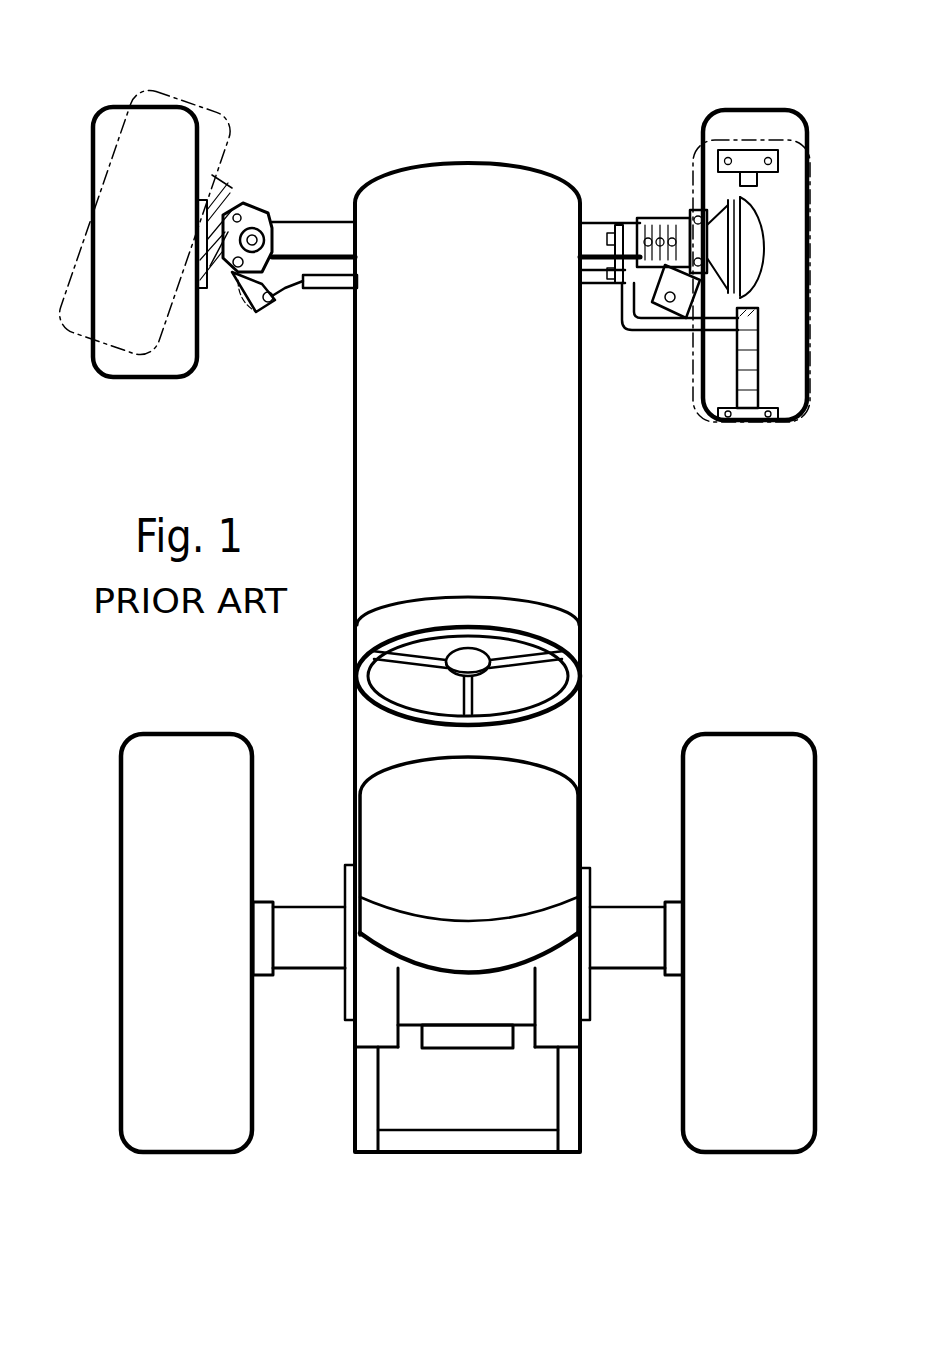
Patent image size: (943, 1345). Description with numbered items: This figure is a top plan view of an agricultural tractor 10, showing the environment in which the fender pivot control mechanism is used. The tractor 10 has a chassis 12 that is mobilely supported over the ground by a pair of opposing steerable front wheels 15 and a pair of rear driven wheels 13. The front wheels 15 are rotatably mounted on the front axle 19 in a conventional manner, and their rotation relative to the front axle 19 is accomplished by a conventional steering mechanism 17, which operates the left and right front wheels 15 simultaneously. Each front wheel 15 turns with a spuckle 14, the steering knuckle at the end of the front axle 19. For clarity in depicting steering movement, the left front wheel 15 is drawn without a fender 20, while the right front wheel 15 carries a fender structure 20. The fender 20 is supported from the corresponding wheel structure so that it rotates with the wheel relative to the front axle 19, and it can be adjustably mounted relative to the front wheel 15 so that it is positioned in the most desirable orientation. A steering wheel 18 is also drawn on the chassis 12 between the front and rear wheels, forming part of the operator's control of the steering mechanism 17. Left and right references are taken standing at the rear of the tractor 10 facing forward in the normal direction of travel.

The tractor 10 is at (416, 108).
The chassis 12 is at (378, 428).
The rear driven wheels 13 is at (206, 733).
The spuckle 14 is at (227, 182).
The front wheel 15 is at (215, 98).
The steering mechanism 17 is at (343, 290).
The steering wheel 18 is at (552, 643).
The front axle 19 is at (318, 228).
The fender 20 is at (705, 420).